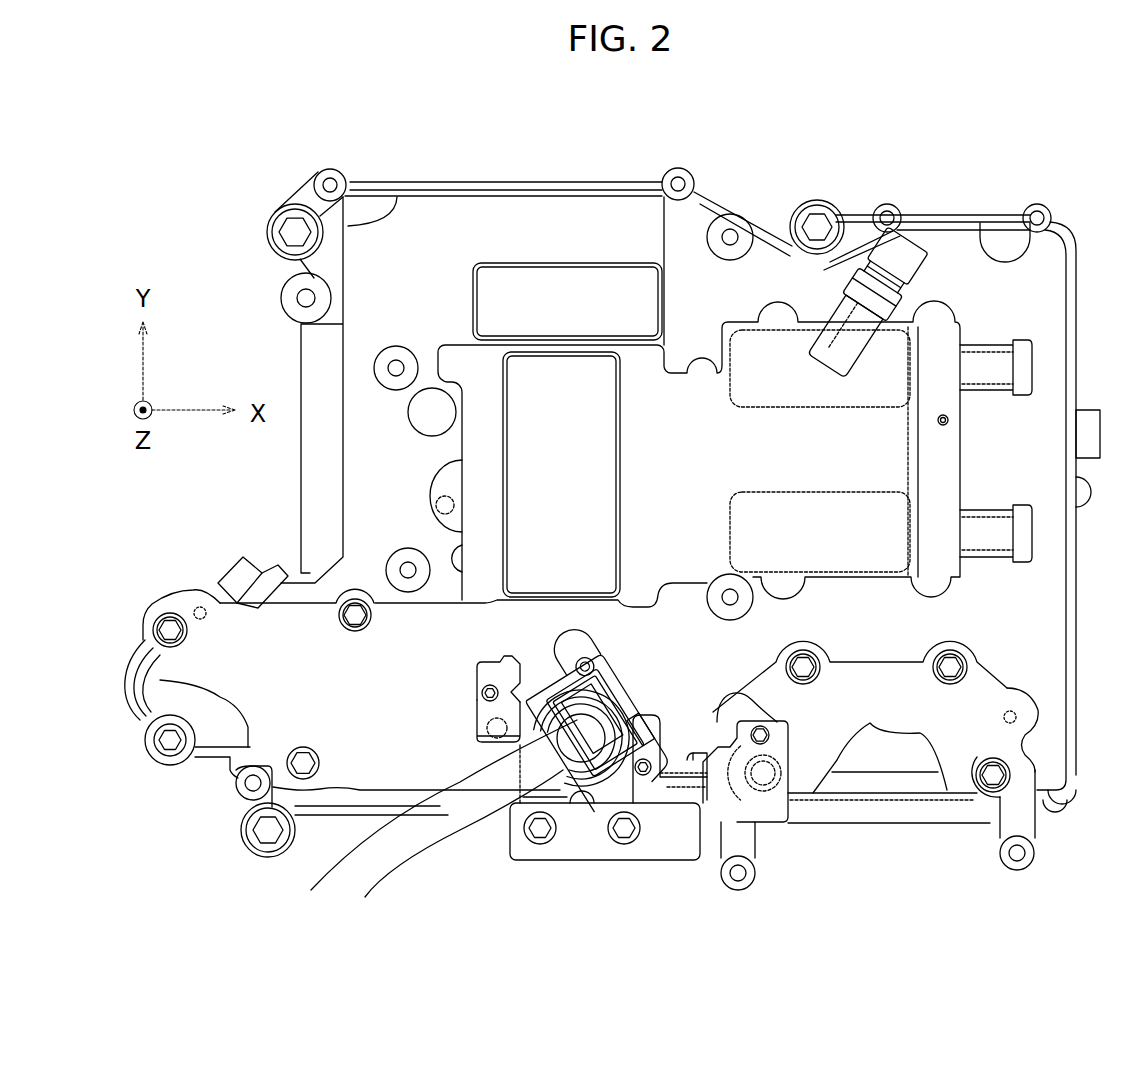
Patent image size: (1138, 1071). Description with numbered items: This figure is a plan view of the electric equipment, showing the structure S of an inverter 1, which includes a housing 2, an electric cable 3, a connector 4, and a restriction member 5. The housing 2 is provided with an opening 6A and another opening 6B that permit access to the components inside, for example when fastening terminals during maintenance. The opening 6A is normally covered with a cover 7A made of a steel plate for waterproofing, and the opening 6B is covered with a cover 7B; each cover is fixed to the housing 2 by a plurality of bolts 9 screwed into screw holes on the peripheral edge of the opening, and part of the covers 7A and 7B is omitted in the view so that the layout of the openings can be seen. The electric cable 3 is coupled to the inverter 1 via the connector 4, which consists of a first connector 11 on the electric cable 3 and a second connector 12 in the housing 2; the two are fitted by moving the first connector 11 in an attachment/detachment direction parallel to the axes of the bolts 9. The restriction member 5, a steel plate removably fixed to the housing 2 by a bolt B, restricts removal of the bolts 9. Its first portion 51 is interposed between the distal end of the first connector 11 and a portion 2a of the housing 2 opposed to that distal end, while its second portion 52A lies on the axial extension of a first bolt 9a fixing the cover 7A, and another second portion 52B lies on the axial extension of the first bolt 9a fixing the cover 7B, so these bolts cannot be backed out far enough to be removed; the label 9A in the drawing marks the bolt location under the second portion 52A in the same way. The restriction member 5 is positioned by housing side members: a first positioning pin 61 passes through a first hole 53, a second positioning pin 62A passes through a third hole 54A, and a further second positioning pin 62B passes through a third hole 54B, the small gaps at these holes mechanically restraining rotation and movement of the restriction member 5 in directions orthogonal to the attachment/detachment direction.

The inverter 1 is at (583, 166).
The housing 2 is at (476, 182).
The portion of the housing 2a is at (668, 728).
The electric cable 3 is at (408, 853).
The connector 4 is at (718, 500).
The restriction member 5 is at (640, 850).
The opening 6A is at (917, 768).
The opening 6B is at (220, 738).
The cover 7A is at (980, 698).
The cover 7B is at (263, 617).
The bolt 9 is at (172, 628).
The first bolt 9a is at (495, 728).
The bolt hole 9A is at (763, 776).
The first connector 11 is at (560, 657).
The second connector 12 is at (637, 690).
The first portion 51 is at (648, 700).
The second portion 52A is at (770, 812).
The second portion 52B is at (485, 708).
The first hole 53 is at (652, 762).
The third hole 54A is at (758, 738).
The third hole 54B is at (493, 663).
The first positioning pin 61 is at (650, 772).
The second positioning pin 62A is at (762, 737).
The second positioning pin 62B is at (488, 690).
The bolt B is at (624, 832).
The structure S is at (913, 118).